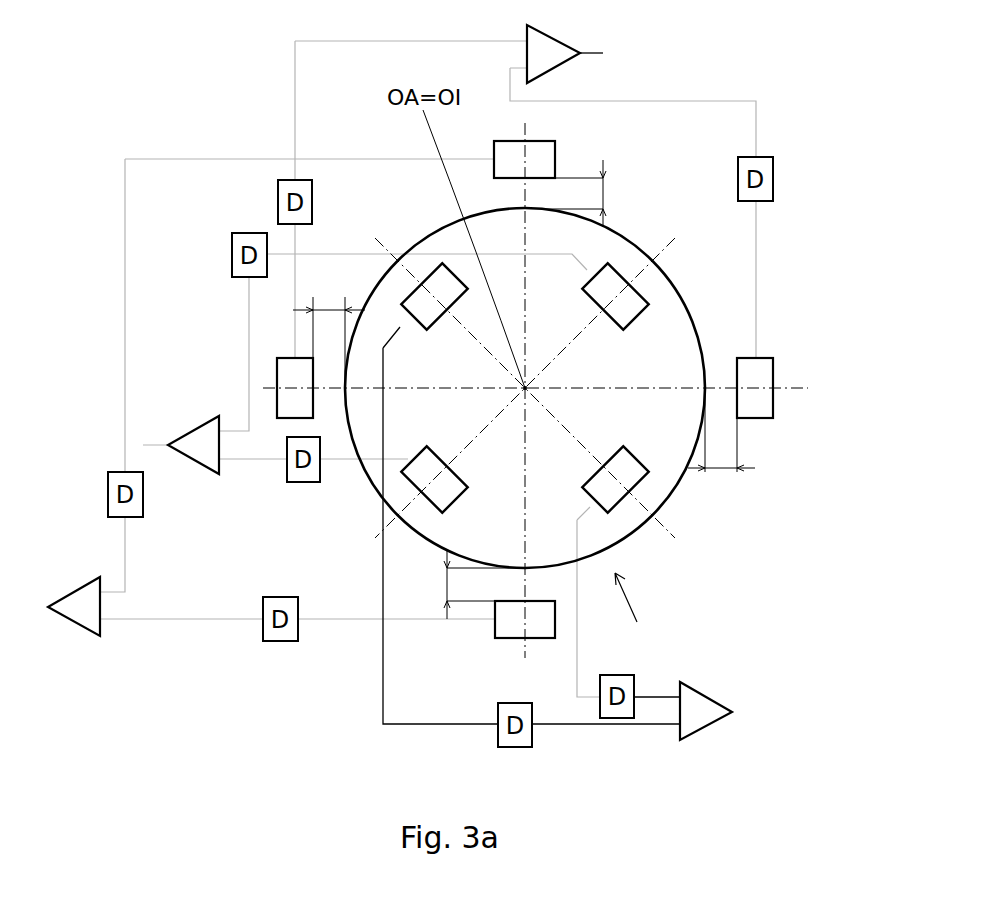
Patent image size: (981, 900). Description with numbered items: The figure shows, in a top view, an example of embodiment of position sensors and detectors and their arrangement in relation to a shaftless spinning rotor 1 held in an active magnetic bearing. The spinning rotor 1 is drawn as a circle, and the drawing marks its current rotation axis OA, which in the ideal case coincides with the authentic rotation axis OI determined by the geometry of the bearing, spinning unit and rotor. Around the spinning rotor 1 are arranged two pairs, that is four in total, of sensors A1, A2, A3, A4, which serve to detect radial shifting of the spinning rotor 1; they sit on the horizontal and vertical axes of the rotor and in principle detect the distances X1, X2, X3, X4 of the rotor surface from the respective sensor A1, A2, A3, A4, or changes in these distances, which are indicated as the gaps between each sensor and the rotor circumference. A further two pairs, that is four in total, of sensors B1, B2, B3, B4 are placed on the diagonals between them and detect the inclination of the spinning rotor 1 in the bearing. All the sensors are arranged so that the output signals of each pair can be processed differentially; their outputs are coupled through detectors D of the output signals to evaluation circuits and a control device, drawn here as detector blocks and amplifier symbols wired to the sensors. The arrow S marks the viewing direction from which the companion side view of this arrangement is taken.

The spinning rotor 1 is at (672, 339).
The sensor of the position of the spinning rotor A1 is at (285, 373).
The sensor of the position of the spinning rotor A2 is at (763, 376).
The sensor of the position of the spinning rotor A3 is at (503, 623).
The sensor of the position of the spinning rotor A4 is at (547, 152).
The sensor of the position of the spinning rotor B1 is at (418, 472).
The sensor of the position of the spinning rotor B2 is at (642, 296).
The sensor of the position of the spinning rotor B3 is at (435, 287).
The sensor of the position of the spinning rotor B4 is at (642, 483).
The distance X1 is at (329, 336).
The distance X2 is at (721, 430).
The distance X3 is at (472, 584).
The distance X4 is at (587, 193).
The arrow S is at (633, 597).